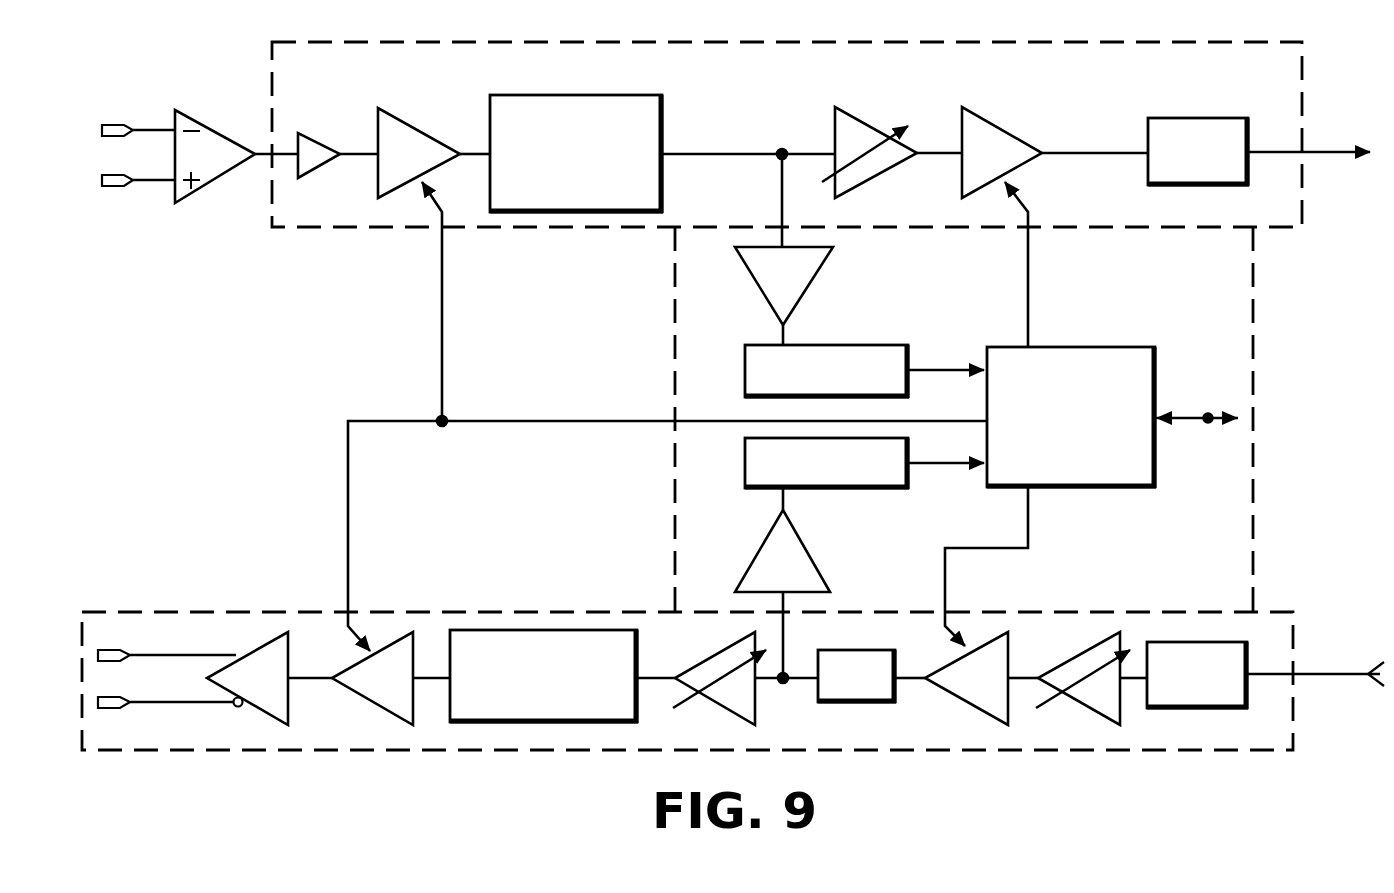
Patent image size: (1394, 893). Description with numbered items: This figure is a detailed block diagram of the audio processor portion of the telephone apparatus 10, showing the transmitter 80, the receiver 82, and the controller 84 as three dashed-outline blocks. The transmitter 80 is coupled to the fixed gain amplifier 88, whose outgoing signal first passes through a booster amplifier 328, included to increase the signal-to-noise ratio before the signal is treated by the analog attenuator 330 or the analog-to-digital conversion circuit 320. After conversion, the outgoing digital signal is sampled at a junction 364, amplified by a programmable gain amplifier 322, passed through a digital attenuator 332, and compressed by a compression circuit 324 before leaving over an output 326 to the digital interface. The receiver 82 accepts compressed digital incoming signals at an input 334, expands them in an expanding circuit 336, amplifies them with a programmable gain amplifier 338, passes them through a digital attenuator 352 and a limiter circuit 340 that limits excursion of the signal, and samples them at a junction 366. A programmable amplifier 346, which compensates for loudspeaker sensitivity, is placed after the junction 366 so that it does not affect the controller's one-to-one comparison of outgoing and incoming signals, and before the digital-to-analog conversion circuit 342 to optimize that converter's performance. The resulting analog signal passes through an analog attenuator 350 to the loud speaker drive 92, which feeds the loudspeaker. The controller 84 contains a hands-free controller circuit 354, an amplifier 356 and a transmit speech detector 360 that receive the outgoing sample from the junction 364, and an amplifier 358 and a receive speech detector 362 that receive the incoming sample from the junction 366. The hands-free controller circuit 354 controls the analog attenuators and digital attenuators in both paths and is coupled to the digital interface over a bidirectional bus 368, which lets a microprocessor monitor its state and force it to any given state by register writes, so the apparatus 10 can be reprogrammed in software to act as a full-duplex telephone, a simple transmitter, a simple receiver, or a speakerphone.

The apparatus 10 is at (158, 411).
The transmitter 80 is at (742, 40).
The receiver 82 is at (556, 752).
The controller 84 is at (1258, 386).
The fixed gain amplifier 88 is at (214, 139).
The loud speaker drive 92 is at (252, 700).
The analog-to-digital conversion circuit 320 is at (563, 108).
The programmable gain amplifier 322 is at (854, 132).
The compression circuit 324 is at (1174, 130).
The output 326 is at (1332, 150).
The booster amplifier 328 is at (322, 146).
The analog attenuator 330 is at (376, 176).
The digital attenuator 332 is at (994, 132).
The input 334 is at (1352, 680).
The expanding circuit 336 is at (1186, 698).
The programmable gain amplifier 338 is at (1090, 692).
The limiter circuit 340 is at (860, 702).
The digital-to-analog conversion circuit 342 is at (532, 710).
The programmable amplifier 346 is at (724, 698).
The analog attenuator 350 is at (390, 702).
The digital attenuator 352 is at (962, 690).
The hands-free controller circuit 354 is at (1132, 376).
The amplifier 356 is at (744, 250).
The amplifier 358 is at (768, 556).
The transmit speech detector 360 is at (752, 378).
The receive speech detector 362 is at (758, 468).
The junction 364 is at (778, 148).
The junction 366 is at (784, 684).
The bidirectional bus 368 is at (1192, 422).